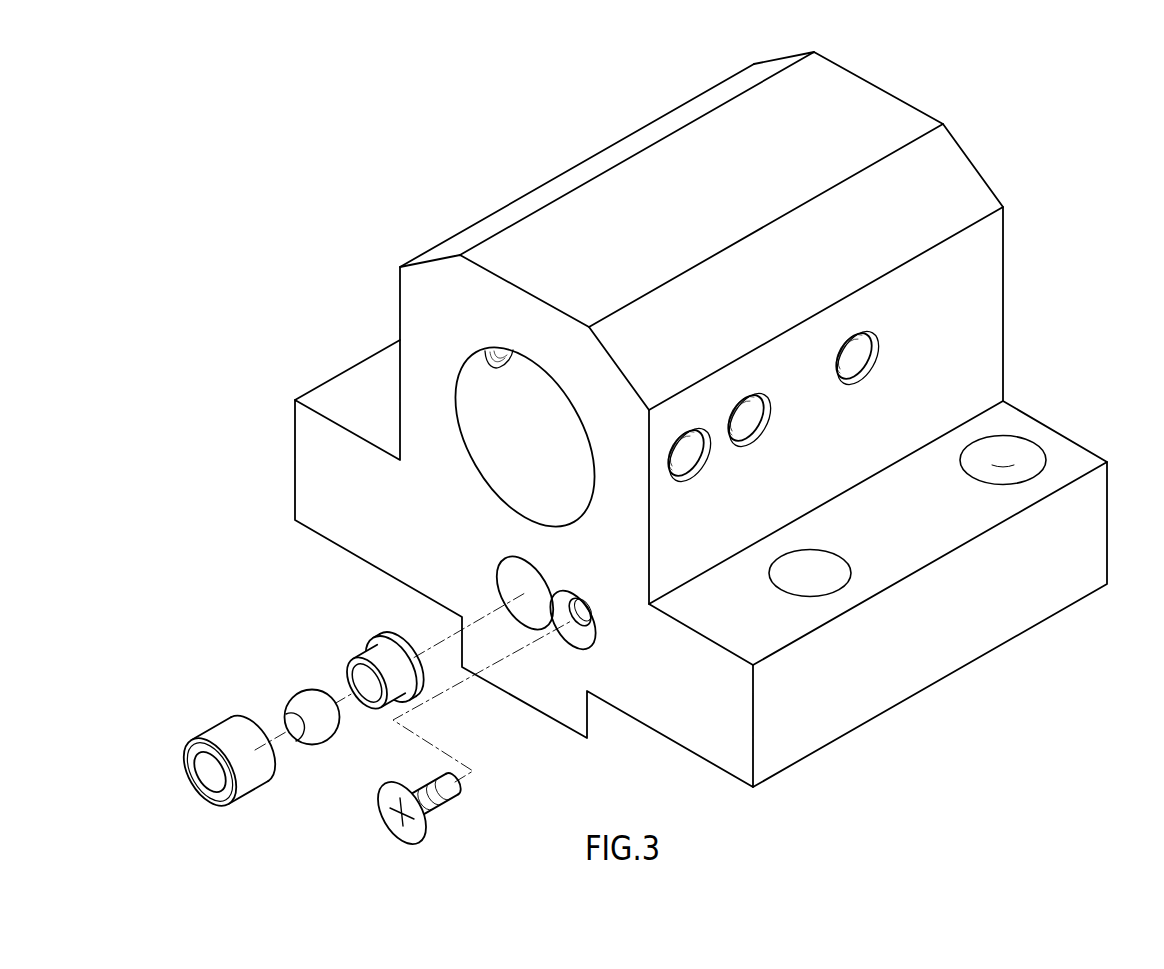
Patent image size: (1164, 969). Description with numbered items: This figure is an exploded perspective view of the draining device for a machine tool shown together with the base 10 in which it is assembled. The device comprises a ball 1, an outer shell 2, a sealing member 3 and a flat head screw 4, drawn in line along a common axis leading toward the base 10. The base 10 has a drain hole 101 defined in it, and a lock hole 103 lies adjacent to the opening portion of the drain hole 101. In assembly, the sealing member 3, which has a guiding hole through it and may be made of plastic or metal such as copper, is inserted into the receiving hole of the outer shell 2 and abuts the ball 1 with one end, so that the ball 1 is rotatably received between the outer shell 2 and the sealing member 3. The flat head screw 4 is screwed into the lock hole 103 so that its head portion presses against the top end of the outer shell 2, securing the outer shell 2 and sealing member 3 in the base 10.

The base 10 is at (649, 419).
The ball 1 is at (290, 700).
The outer shell 2 is at (216, 733).
The sealing member 3 is at (373, 658).
The flat head screw 4 is at (384, 821).
The drain hole 101 is at (512, 582).
The lock hole 103 is at (557, 632).